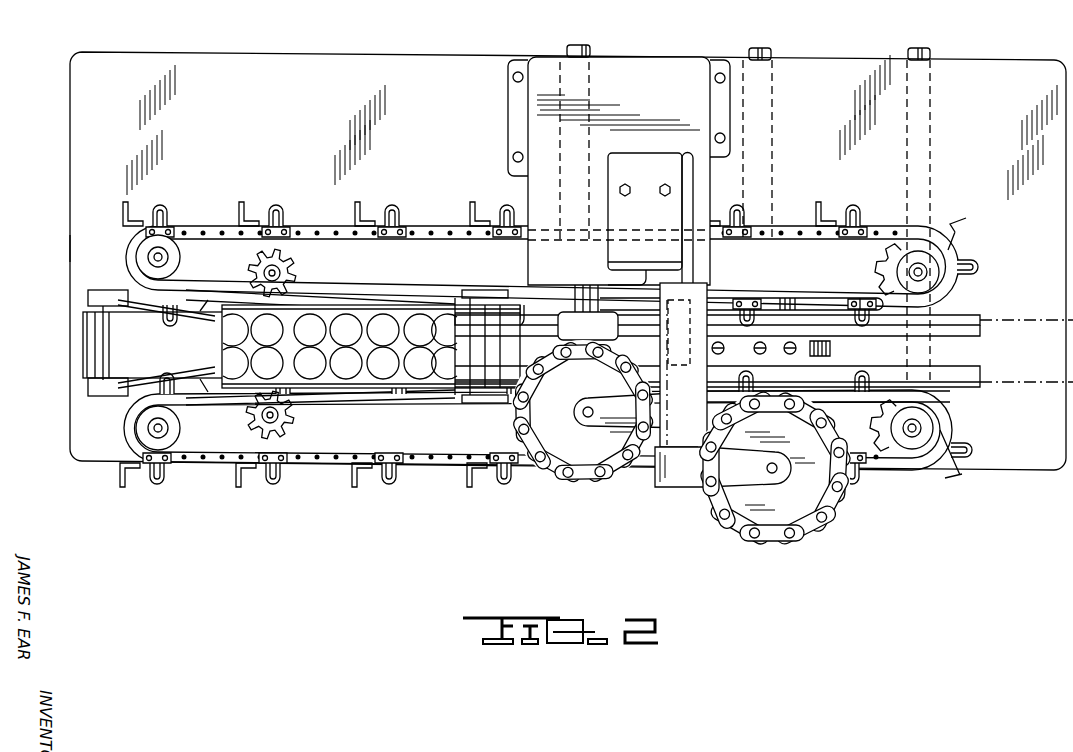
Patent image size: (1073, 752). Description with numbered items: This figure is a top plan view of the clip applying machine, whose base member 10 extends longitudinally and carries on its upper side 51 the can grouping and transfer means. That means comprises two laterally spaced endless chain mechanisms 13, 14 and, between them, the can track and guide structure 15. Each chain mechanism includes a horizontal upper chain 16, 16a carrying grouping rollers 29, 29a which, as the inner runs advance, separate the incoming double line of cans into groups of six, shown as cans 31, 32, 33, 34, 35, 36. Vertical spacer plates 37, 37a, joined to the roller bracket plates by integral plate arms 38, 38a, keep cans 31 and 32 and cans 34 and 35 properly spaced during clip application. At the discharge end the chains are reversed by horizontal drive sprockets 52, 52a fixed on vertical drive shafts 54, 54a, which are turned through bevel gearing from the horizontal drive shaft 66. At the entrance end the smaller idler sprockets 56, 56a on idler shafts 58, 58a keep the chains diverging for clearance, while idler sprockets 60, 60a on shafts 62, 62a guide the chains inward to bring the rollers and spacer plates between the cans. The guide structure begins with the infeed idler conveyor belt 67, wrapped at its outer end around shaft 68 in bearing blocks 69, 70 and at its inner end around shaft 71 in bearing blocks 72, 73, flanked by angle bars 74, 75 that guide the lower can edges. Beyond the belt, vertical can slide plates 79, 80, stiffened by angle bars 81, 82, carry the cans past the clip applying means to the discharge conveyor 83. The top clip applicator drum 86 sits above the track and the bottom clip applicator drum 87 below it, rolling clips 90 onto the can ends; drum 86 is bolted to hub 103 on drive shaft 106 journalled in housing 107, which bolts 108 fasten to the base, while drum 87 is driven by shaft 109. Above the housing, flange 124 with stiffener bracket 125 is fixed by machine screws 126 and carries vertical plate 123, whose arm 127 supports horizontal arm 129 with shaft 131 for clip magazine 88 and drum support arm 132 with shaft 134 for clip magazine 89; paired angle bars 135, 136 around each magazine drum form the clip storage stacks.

The base member 10 is at (68, 72).
The chain mechanism 13 is at (205, 468).
The chain mechanism 14 is at (216, 224).
The can track and guide structure 15 is at (140, 402).
The upper chain 16 is at (430, 470).
The upper chain 16a is at (447, 224).
The grouping roller 29 is at (392, 478).
The grouping roller 29a is at (282, 212).
The can 31 is at (365, 330).
The can 32 is at (212, 331).
The can 33 is at (325, 330).
The can 34 is at (365, 363).
The can 35 is at (212, 364).
The can 36 is at (325, 363).
The spacer plate 37 is at (118, 478).
The spacer plate 37a is at (818, 210).
The plate arm 38 is at (270, 476).
The plate arm 38a is at (845, 222).
The upper side 51 is at (68, 246).
The horizontal drive sprocket 52 is at (893, 450).
The horizontal drive sprocket 52a is at (900, 250).
The vertical drive shaft 54 is at (925, 428).
The vertical drive shaft 54a is at (925, 270).
The idler sprocket 56 is at (140, 434).
The idler sprocket 56a is at (148, 252).
The vertical idler shaft 58 is at (170, 430).
The vertical idler shaft 58a is at (148, 258).
The idler sprocket 60 is at (295, 426).
The idler sprocket 60a is at (290, 256).
The vertical shaft 62 is at (261, 415).
The vertical shaft 62a is at (281, 273).
The drive shaft 66 is at (919, 52).
The infeed idler conveyor belt 67 is at (82, 346).
The horizontal shaft 68 is at (86, 320).
The bearing block 69 is at (86, 296).
The bearing block 70 is at (86, 386).
The horizontal shaft 71 is at (478, 296).
The bearing block 72 is at (472, 290).
The bearing block 73 is at (470, 403).
The angle bar 74 is at (148, 306).
The angle bar 75 is at (138, 380).
The vertical plate 79 is at (960, 333).
The vertical plate 80 is at (960, 373).
The angle bar 81 is at (950, 314).
The angle bar 82 is at (955, 393).
The discharge conveyor 83 is at (1042, 322).
The top clip applicator drum 86 is at (560, 312).
The bottom clip applicator drum 87 is at (771, 348).
The clip magazine 88 is at (568, 482).
The clip magazine 89 is at (738, 540).
The clip 90 is at (594, 480).
The hub 103 is at (640, 318).
The drive shaft 106 is at (588, 48).
The vertical standard or housing 107 is at (672, 65).
The bolt 108 is at (513, 78).
The drive shaft 109 is at (765, 50).
The vertical plate 123 is at (640, 262).
The integral flange 124 is at (650, 156).
The stiffener bracket 125 is at (694, 185).
The machine screw 126 is at (626, 194).
The arm 127 is at (700, 312).
The horizontal arm 129 is at (690, 386).
The vertical shaft 131 is at (586, 406).
The drum support arm 132 is at (670, 485).
The vertical shaft 134 is at (772, 474).
The angle bar 135 is at (520, 430).
The angle bar 136 is at (535, 470).